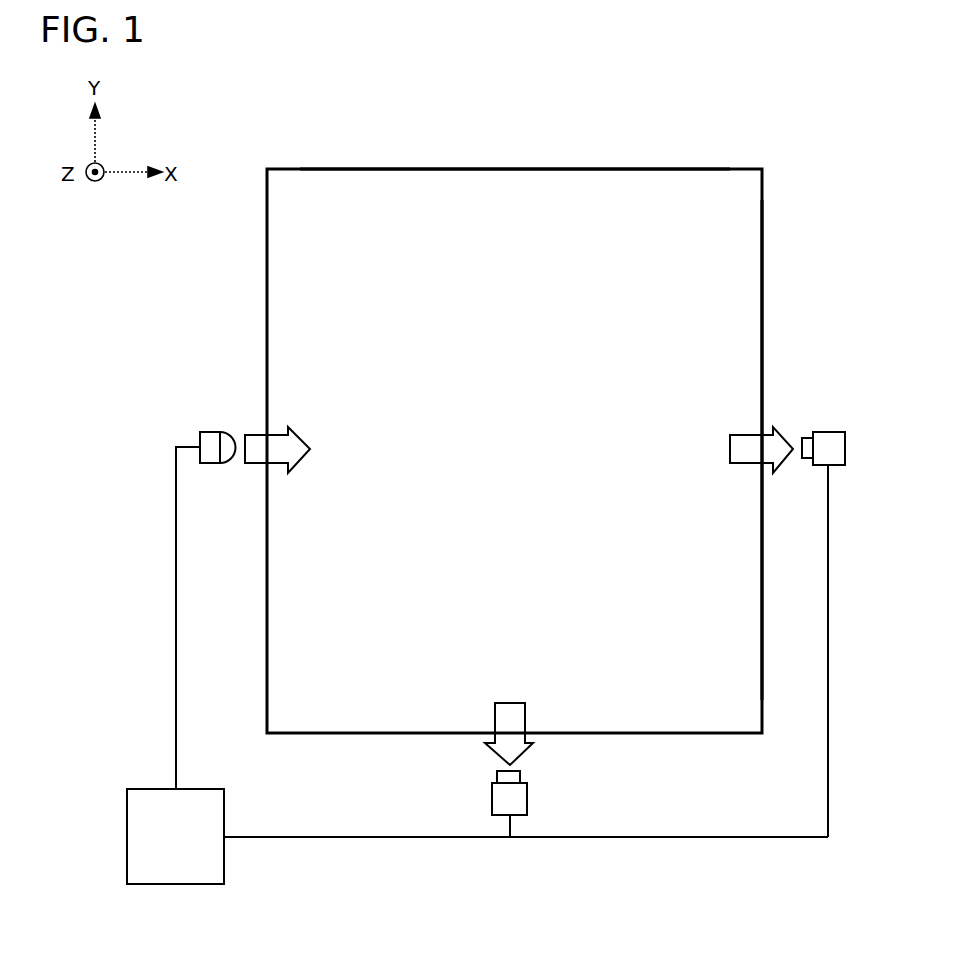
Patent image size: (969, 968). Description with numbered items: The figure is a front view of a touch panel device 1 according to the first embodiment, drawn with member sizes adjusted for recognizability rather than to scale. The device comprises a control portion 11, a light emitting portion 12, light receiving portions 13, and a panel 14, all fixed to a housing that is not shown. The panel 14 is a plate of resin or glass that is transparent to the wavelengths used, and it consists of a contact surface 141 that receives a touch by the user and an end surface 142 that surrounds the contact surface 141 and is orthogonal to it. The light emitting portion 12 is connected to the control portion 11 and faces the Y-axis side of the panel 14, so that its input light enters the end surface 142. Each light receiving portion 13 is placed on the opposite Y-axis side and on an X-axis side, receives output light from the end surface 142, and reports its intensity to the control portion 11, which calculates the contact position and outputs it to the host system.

The touch panel device 1 is at (292, 156).
The control portion 11 is at (224, 815).
The light emitting portion 12 is at (212, 432).
The light receiving portion 13 is at (830, 432).
The panel 14 is at (762, 169).
The contact surface 141 is at (652, 183).
The end surface 142 is at (762, 240).